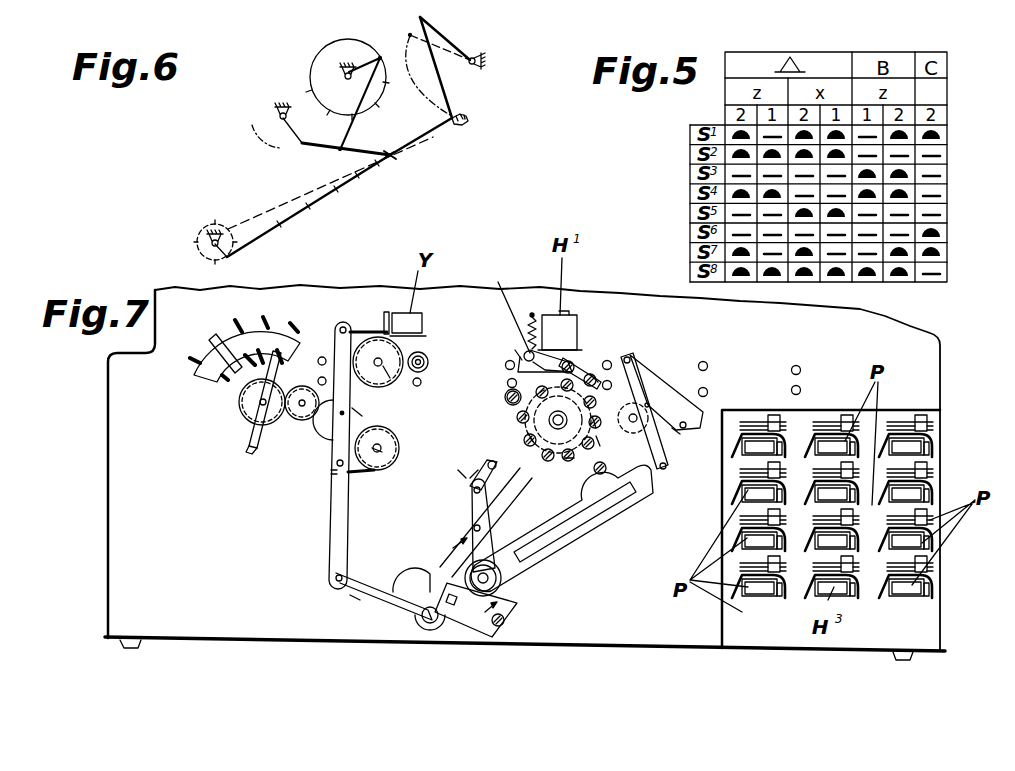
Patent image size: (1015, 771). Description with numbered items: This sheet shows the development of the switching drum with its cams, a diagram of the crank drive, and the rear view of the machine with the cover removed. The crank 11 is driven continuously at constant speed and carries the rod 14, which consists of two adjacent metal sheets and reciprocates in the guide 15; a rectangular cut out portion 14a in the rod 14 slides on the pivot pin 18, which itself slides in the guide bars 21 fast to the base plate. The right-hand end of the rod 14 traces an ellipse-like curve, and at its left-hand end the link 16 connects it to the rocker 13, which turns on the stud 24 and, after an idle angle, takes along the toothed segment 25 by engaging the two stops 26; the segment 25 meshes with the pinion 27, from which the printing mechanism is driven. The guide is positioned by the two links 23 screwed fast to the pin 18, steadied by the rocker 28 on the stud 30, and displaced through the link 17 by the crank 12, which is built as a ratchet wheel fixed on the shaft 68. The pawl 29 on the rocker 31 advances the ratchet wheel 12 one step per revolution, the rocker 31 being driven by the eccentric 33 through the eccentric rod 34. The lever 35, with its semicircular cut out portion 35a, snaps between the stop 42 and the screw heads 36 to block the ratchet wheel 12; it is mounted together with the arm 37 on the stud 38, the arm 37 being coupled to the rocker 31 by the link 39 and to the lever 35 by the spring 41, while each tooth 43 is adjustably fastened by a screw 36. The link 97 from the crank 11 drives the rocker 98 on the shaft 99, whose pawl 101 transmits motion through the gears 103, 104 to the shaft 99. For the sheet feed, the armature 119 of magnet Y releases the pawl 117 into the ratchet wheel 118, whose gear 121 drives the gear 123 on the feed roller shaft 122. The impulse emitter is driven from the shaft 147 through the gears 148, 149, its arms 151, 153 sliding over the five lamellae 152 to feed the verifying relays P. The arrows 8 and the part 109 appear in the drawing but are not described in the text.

In FIG. 7, the direction arrow 8 is at (466, 580).
In FIG. 6, the crank 11 is at (208, 252).
In FIG. 7, the crank 11 is at (370, 590).
In FIG. 6, the crank (ratchet wheel) 12 is at (362, 67).
In FIG. 7, the crank (ratchet wheel) 12 is at (528, 438).
In FIG. 6, the rocker 13 is at (447, 39).
In FIG. 7, the rocker 13 is at (657, 386).
In FIG. 6, the rod 14 is at (323, 200).
In FIG. 7, the rod 14 is at (443, 624).
In FIG. 7, the rectangular cut out portion 14a is at (457, 622).
In FIG. 6, the guide 15 is at (397, 160).
In FIG. 6, the link 16 is at (442, 77).
In FIG. 7, the link 16 is at (660, 470).
In FIG. 6, the link 17 is at (354, 128).
In FIG. 7, the link 17 is at (527, 478).
In FIG. 7, the pivot pin 18 is at (500, 587).
In FIG. 7, the guide bars 21 is at (568, 540).
In FIG. 6, the links 23 is at (317, 149).
In FIG. 7, the links 23 is at (472, 508).
In FIG. 7, the stud 24 is at (683, 403).
In FIG. 7, the toothed segment 25 is at (685, 428).
In FIG. 7, the stops 26 is at (677, 433).
In FIG. 7, the pinion 27 is at (649, 404).
In FIG. 6, the rocker 28 is at (290, 133).
In FIG. 7, the rocker 28 is at (477, 472).
In FIG. 7, the pawl 29 is at (506, 395).
In FIG. 7, the stud 30 is at (460, 474).
In FIG. 7, the rocker 31 is at (520, 405).
In FIG. 7, the eccentric 33 is at (408, 620).
In FIG. 7, the eccentric rod 34 is at (498, 528).
In FIG. 7, the lever 35 is at (551, 354).
In FIG. 7, the semicircular cut out portion 35a is at (503, 304).
In FIG. 7, the screws 36 is at (570, 459).
In FIG. 7, the arm 37 is at (595, 378).
In FIG. 7, the stud 38 is at (519, 357).
In FIG. 7, the link 39 is at (598, 380).
In FIG. 7, the spring 41 is at (600, 358).
In FIG. 7, the stop 42 is at (580, 350).
In FIG. 7, the teeth 43 is at (599, 441).
In FIG. 7, the shaft 68 is at (594, 418).
In FIG. 7, the link 97 is at (348, 597).
In FIG. 7, the rocker 98 is at (335, 543).
In FIG. 7, the shaft 99 is at (342, 414).
In FIG. 7, the pawl 101 is at (361, 475).
In FIG. 7, the gear 103 is at (400, 450).
In FIG. 7, the gear 104 is at (360, 413).
In FIG. 7, the pin 109 is at (379, 452).
In FIG. 7, the pawl 117 is at (356, 330).
In FIG. 7, the ratchet wheel 118 is at (385, 377).
In FIG. 7, the armature 119 is at (386, 311).
In FIG. 7, the gear 121 is at (386, 374).
In FIG. 7, the feed roller shaft 122 is at (421, 352).
In FIG. 7, the gear 123 is at (426, 361).
In FIG. 7, the shaft 147 is at (302, 401).
In FIG. 7, the gear 148 is at (303, 414).
In FIG. 7, the gear 149 is at (247, 405).
In FIG. 7, the arm 151 is at (257, 415).
In FIG. 7, the lamellae 152 is at (210, 338).
In FIG. 7, the arm 153 is at (251, 446).